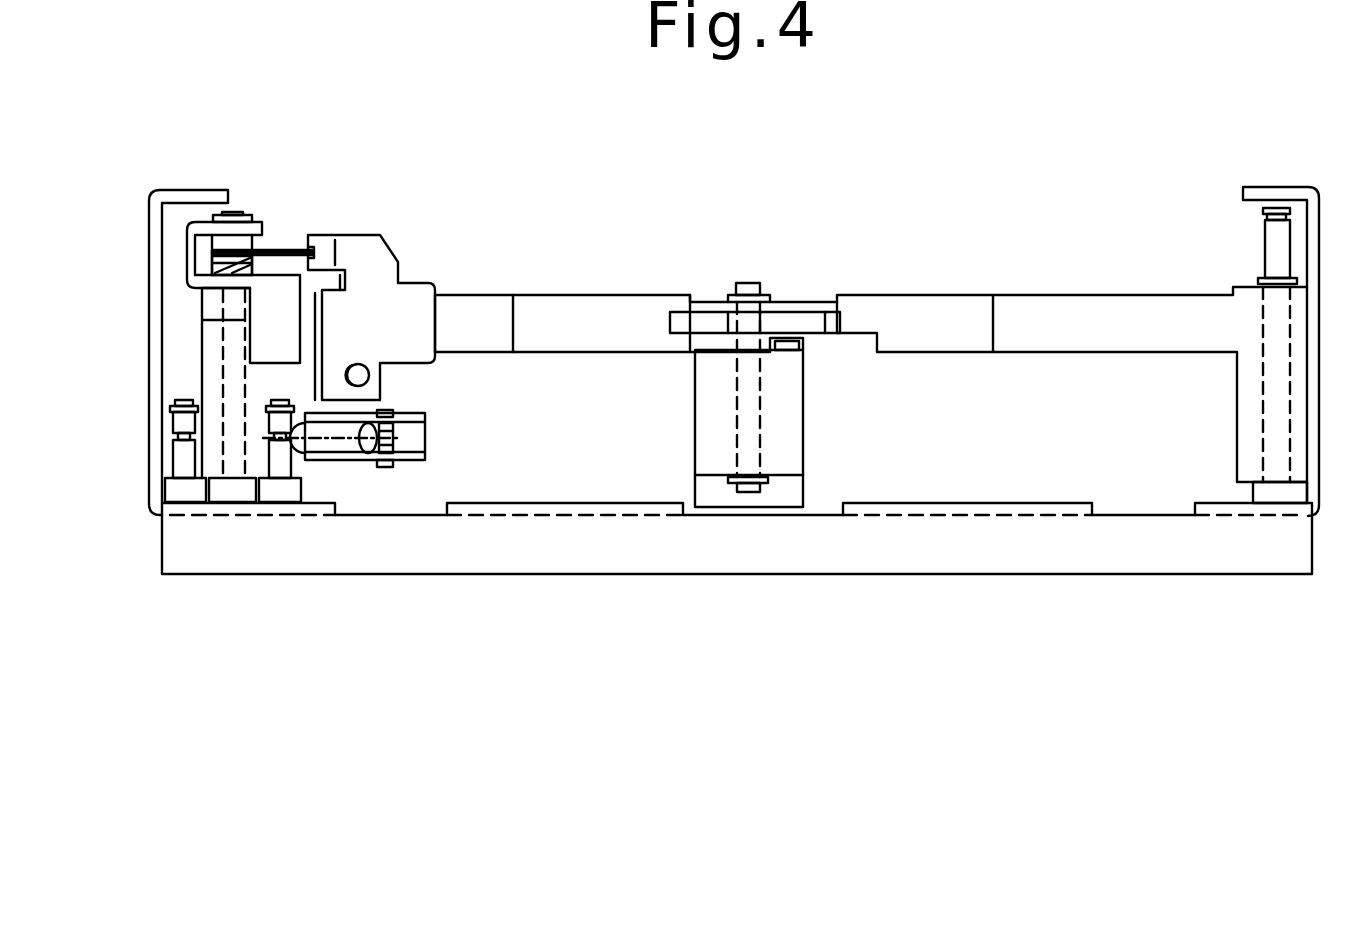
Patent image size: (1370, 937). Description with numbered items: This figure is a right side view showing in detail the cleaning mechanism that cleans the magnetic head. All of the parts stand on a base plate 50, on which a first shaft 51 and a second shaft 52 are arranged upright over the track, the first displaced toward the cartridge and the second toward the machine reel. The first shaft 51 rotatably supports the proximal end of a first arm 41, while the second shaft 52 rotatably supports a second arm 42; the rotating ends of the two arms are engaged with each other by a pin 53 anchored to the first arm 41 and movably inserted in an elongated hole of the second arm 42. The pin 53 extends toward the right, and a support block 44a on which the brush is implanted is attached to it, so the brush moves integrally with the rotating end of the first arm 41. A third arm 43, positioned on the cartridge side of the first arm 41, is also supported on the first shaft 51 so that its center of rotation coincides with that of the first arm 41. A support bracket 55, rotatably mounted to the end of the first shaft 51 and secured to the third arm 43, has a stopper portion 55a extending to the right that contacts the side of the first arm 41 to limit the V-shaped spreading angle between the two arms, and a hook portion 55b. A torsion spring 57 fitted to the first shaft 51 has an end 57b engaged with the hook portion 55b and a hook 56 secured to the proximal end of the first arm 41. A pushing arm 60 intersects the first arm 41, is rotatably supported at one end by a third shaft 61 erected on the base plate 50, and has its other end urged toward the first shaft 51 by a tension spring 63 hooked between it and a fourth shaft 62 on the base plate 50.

The first arm 41 is at (612, 338).
The second arm 42 is at (1188, 320).
The third arm 43 is at (207, 307).
The support block 44a is at (795, 433).
The base plate 50 is at (1088, 553).
The first shaft 51 is at (233, 212).
The second shaft 52 is at (1280, 247).
The pin 53 is at (745, 490).
The support bracket 55 is at (283, 278).
The stopper portion 55a is at (266, 354).
The hook portion 55b is at (208, 245).
The hook 56 is at (388, 268).
The torsion spring 57 is at (253, 258).
The end of torsion spring 57b is at (282, 252).
The pushing arm 60 is at (427, 433).
The third shaft 61 is at (186, 463).
The fourth shaft 62 is at (282, 463).
The tension spring 63 is at (357, 452).